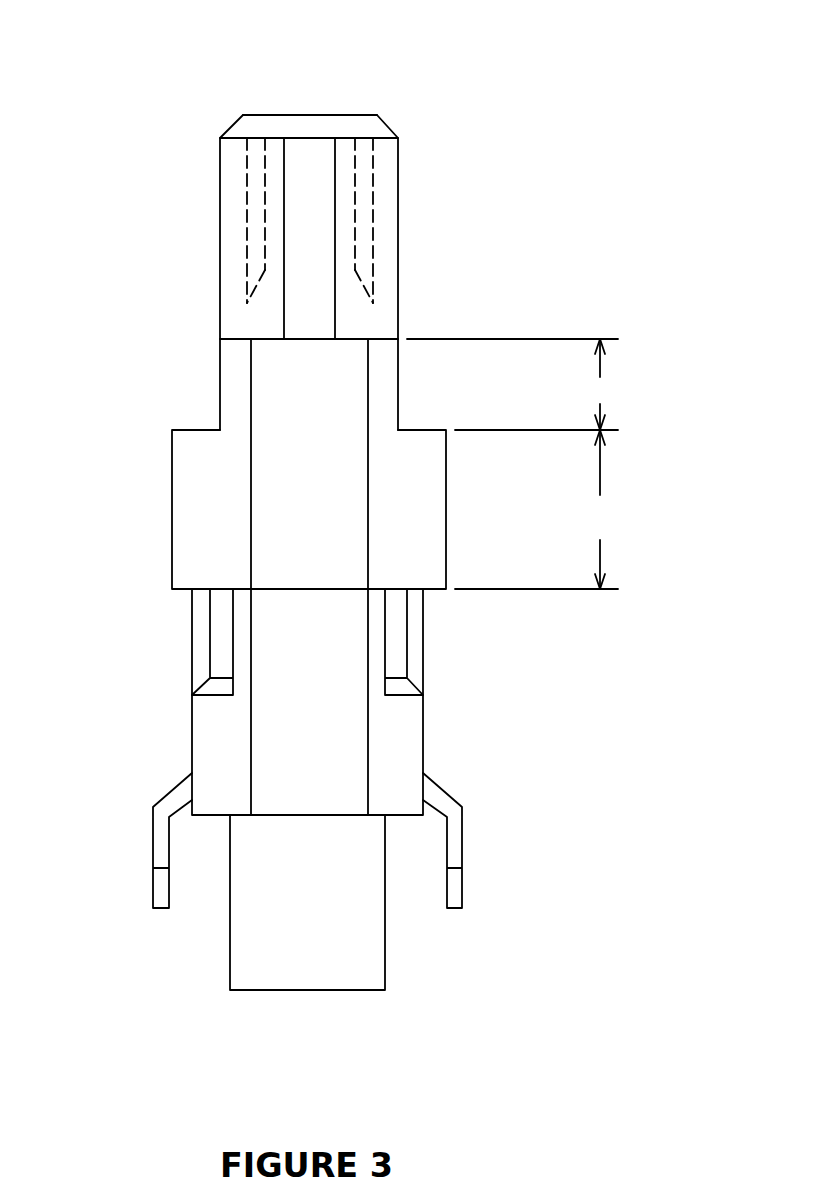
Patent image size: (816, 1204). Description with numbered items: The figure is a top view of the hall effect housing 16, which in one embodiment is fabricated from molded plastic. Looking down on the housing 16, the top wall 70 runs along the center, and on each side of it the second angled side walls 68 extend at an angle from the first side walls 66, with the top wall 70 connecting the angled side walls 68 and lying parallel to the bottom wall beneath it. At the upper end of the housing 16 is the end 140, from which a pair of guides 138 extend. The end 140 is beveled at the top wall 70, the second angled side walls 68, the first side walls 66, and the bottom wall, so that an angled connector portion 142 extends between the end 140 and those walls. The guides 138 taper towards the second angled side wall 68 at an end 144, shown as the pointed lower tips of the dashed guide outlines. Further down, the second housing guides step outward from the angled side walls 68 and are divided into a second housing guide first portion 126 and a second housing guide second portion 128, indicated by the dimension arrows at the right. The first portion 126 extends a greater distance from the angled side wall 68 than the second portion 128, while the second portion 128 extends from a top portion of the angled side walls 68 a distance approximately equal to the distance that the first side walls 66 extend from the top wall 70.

The hall effect housing 16 is at (607, 120).
The first side walls 66 is at (220, 213).
The second angled side walls 68 is at (233, 327).
The top wall 70 is at (308, 233).
The second housing guide first portion 126 is at (538, 509).
The second housing guide second portion 128 is at (514, 384).
The guides 138 is at (257, 187).
The end 140 is at (300, 115).
The angled connector portion 142 is at (233, 127).
The end of guide 144 is at (250, 305).